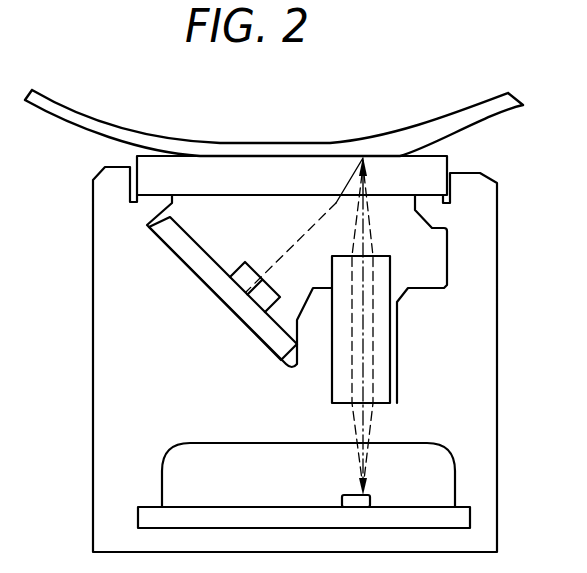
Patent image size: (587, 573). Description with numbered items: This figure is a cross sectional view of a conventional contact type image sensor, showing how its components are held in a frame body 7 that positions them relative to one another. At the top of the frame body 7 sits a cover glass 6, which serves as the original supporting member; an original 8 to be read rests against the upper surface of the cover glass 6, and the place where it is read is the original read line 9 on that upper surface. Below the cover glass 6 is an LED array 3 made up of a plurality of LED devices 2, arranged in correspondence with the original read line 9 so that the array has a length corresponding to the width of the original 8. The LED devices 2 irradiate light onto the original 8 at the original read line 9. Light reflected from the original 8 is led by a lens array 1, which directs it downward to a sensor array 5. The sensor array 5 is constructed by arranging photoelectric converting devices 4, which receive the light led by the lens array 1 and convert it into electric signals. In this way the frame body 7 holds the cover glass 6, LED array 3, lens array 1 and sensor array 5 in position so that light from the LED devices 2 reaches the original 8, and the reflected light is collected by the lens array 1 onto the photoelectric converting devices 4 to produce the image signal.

The lens array 1 is at (382, 276).
The LED device 2 is at (240, 273).
The LED array 3 is at (188, 247).
The photoelectric converting device 4 is at (342, 497).
The sensor array 5 is at (462, 515).
The cover glass 6 is at (274, 170).
The frame body 7 is at (478, 325).
The original 8 is at (73, 112).
The original read line 9 is at (363, 157).